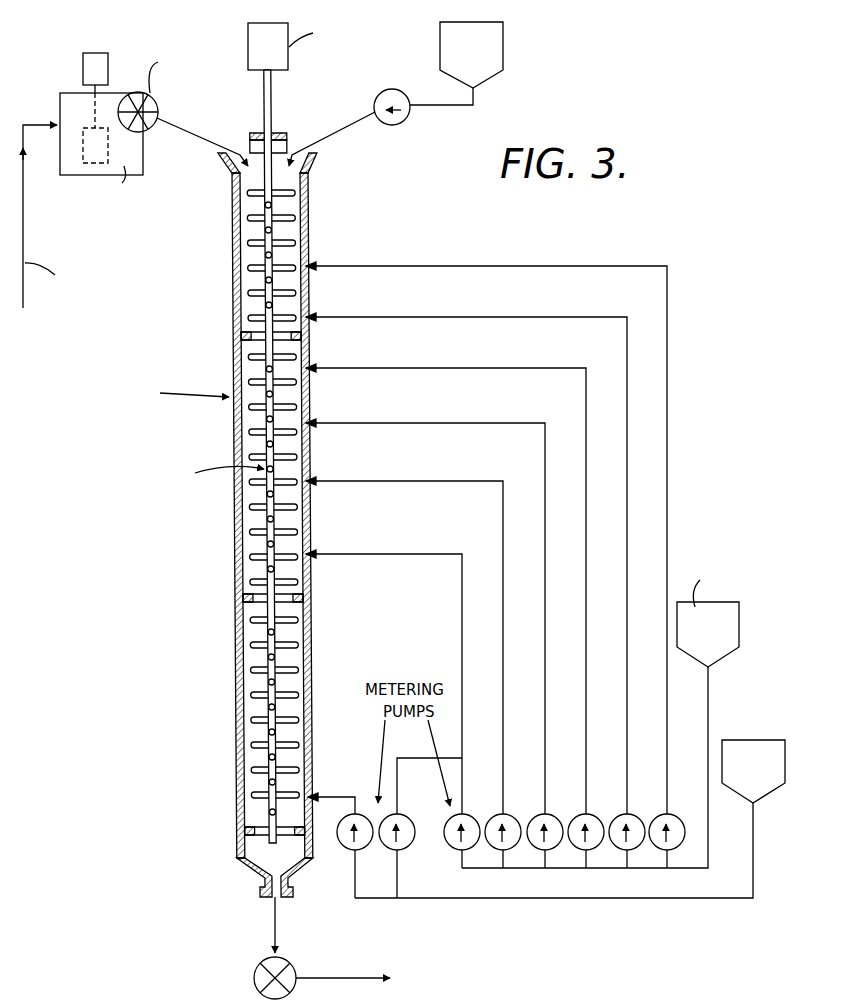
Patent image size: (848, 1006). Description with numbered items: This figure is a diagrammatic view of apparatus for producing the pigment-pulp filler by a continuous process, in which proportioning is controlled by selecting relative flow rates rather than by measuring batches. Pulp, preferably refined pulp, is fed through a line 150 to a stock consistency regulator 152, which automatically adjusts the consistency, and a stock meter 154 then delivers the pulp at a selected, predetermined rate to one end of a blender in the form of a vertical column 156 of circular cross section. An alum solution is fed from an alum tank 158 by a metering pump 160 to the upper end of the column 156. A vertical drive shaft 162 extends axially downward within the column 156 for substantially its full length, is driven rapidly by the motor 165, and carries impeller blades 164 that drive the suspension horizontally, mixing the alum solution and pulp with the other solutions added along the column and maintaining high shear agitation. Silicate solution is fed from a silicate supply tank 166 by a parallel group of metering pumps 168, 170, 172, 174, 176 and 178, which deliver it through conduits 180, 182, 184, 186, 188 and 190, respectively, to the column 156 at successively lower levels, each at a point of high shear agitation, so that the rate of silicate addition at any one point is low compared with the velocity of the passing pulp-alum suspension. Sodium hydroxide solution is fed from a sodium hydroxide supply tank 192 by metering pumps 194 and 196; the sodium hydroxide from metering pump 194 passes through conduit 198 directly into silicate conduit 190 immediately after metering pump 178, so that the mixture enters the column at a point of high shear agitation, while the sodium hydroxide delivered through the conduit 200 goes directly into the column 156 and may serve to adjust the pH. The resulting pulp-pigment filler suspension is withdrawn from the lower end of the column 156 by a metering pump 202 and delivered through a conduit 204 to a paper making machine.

The line 150 is at (25, 292).
The stock consistency regulator 152 is at (68, 88).
The stock meter 154 is at (162, 98).
The vertical column 156 is at (229, 290).
The alum tank 158 is at (505, 48).
The metering pump 160 is at (388, 90).
The vertical drive shaft 162 is at (272, 105).
The impeller blades 164 is at (237, 456).
The motor 165 is at (247, 33).
The silicate supply tank 166 is at (740, 622).
The metering pump 168 is at (674, 813).
The metering pump 170 is at (632, 813).
The metering pump 172 is at (591, 813).
The metering pump 174 is at (550, 813).
The metering pump 176 is at (508, 813).
The metering pump 178 is at (467, 813).
The conduit 180 is at (667, 498).
The conduit 182 is at (628, 500).
The conduit 184 is at (586, 507).
The conduit 186 is at (545, 522).
The conduit 188 is at (503, 522).
The silicate conduit 190 is at (462, 583).
The sodium hydroxide supply tank 192 is at (748, 741).
The metering pump 194 is at (408, 848).
The metering pump 196 is at (344, 848).
The conduit 198 is at (415, 757).
The conduit 200 is at (350, 787).
The metering pump 202 is at (254, 978).
The conduit 204 is at (342, 978).